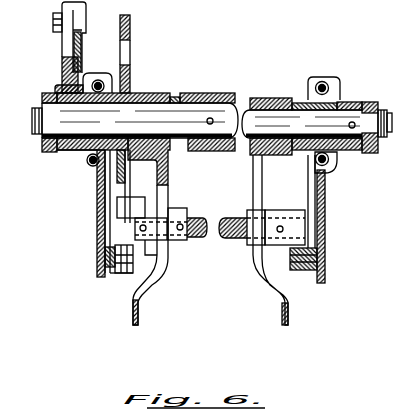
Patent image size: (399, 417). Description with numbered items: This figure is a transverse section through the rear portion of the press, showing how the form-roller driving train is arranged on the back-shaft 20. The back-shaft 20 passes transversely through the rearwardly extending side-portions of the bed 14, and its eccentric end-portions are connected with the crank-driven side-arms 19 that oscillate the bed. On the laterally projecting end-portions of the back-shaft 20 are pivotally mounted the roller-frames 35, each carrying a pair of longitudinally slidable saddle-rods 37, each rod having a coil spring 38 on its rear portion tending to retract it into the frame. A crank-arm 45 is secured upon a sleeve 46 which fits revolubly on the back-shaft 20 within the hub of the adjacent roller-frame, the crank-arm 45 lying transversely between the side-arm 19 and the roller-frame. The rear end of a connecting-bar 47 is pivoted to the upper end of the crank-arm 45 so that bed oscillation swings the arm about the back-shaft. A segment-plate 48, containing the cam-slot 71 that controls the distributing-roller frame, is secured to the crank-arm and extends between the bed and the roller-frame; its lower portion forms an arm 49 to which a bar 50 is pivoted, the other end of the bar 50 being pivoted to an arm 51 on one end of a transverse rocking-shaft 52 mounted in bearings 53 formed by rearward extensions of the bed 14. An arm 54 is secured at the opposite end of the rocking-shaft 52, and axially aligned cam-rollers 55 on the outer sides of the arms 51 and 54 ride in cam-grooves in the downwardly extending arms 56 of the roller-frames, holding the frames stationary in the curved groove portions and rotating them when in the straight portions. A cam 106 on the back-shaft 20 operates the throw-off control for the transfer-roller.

The bed 14 is at (146, 93).
The side-arms 19 is at (43, 149).
The back-shaft 20 is at (176, 112).
The roller-frames 35 is at (103, 69).
The saddle-rods 37 is at (341, 98).
The coil spring 38 is at (340, 82).
The crank-arm 45 is at (63, 52).
The sleeve 46 is at (75, 155).
The connecting-bar 47 is at (83, 45).
The segment-plate 48 is at (131, 30).
The arm 49 is at (126, 173).
The bar 50 is at (162, 258).
The arm 51 is at (120, 232).
The rocking-shaft 52 is at (232, 238).
The bearings 53 is at (175, 210).
The arm 54 is at (295, 212).
The cam-rollers 55 is at (105, 262).
The arms 56 is at (97, 206).
The cam-slot 71 is at (128, 53).
The cam 106 is at (222, 89).